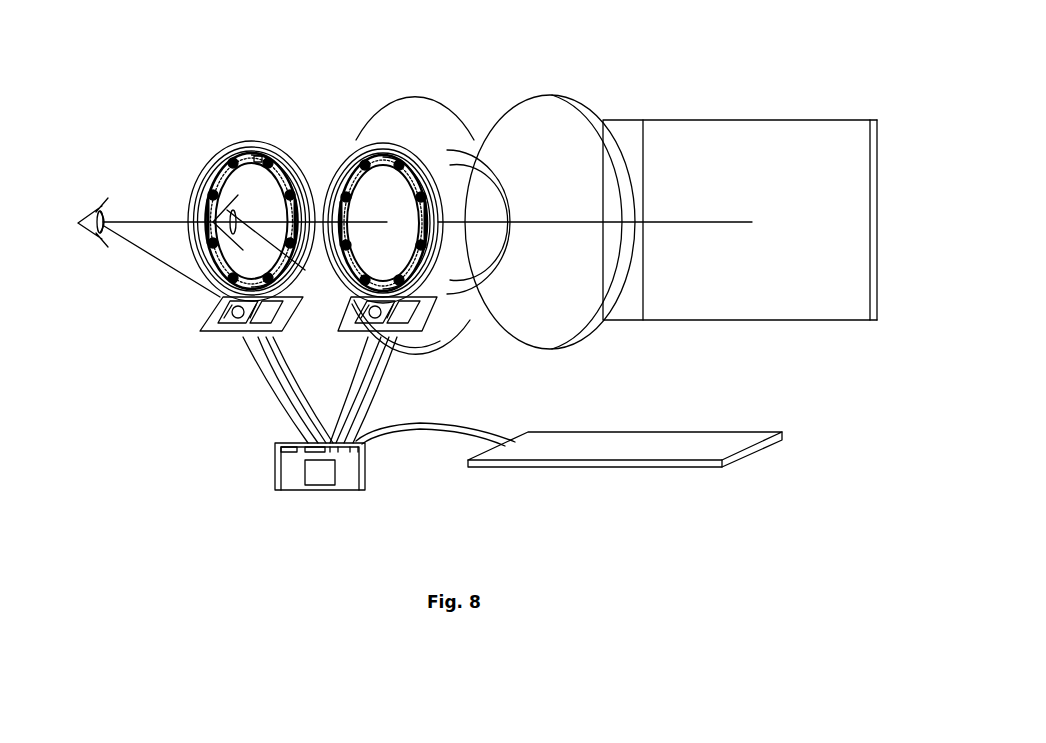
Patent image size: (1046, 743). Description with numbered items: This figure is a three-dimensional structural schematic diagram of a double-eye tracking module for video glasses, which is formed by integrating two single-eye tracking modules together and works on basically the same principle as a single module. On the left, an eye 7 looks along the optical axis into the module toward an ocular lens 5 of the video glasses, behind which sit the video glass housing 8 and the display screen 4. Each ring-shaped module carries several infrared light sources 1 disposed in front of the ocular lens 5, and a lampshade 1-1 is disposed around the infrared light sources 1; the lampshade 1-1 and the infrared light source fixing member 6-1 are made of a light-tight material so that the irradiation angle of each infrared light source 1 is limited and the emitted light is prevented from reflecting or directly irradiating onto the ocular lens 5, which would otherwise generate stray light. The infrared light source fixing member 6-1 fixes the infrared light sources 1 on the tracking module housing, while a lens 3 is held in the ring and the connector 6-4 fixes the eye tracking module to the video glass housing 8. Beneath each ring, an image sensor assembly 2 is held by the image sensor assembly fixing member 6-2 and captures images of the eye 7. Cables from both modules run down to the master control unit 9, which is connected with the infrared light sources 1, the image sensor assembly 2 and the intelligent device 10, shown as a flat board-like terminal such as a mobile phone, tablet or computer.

The infrared light source 1 is at (227, 155).
The lampshade 1-1 is at (232, 192).
The image sensor assembly 2 is at (268, 325).
The lens 3 is at (202, 173).
The display screen 4 is at (684, 140).
The ocular lens 5 is at (480, 177).
The infrared light source fixing member 6-1 is at (258, 160).
The image sensor assembly fixing member 6-2 is at (287, 312).
The connector 6-4 is at (295, 142).
The eye 7 is at (98, 208).
The video glass housing 8 is at (551, 125).
The master control unit 9 is at (287, 470).
The intelligent device 10 is at (571, 448).